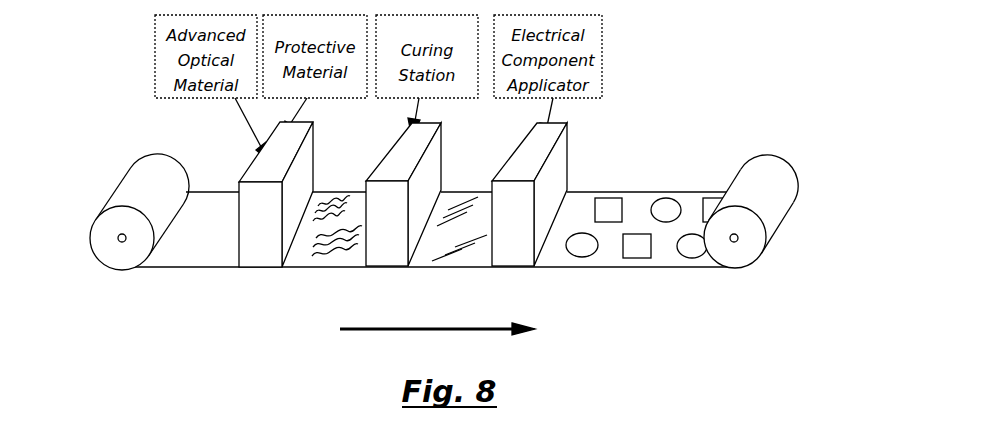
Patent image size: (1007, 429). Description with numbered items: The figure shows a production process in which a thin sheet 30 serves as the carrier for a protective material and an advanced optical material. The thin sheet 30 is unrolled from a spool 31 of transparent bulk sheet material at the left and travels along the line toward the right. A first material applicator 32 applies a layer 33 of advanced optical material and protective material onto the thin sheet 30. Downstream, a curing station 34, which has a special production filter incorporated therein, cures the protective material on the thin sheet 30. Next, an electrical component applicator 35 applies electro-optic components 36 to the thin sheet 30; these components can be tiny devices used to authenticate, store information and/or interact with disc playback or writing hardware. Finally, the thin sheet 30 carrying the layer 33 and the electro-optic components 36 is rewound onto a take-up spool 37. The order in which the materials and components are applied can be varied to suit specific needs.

The thin sheet 30 is at (206, 245).
The spool 31 is at (132, 257).
The first material applicator 32 is at (258, 250).
The layer 33 is at (320, 256).
The curing station 34 is at (395, 262).
The electrical component applicator 35 is at (508, 258).
The electro-optic components 36 is at (585, 250).
The take-up spool 37 is at (734, 255).